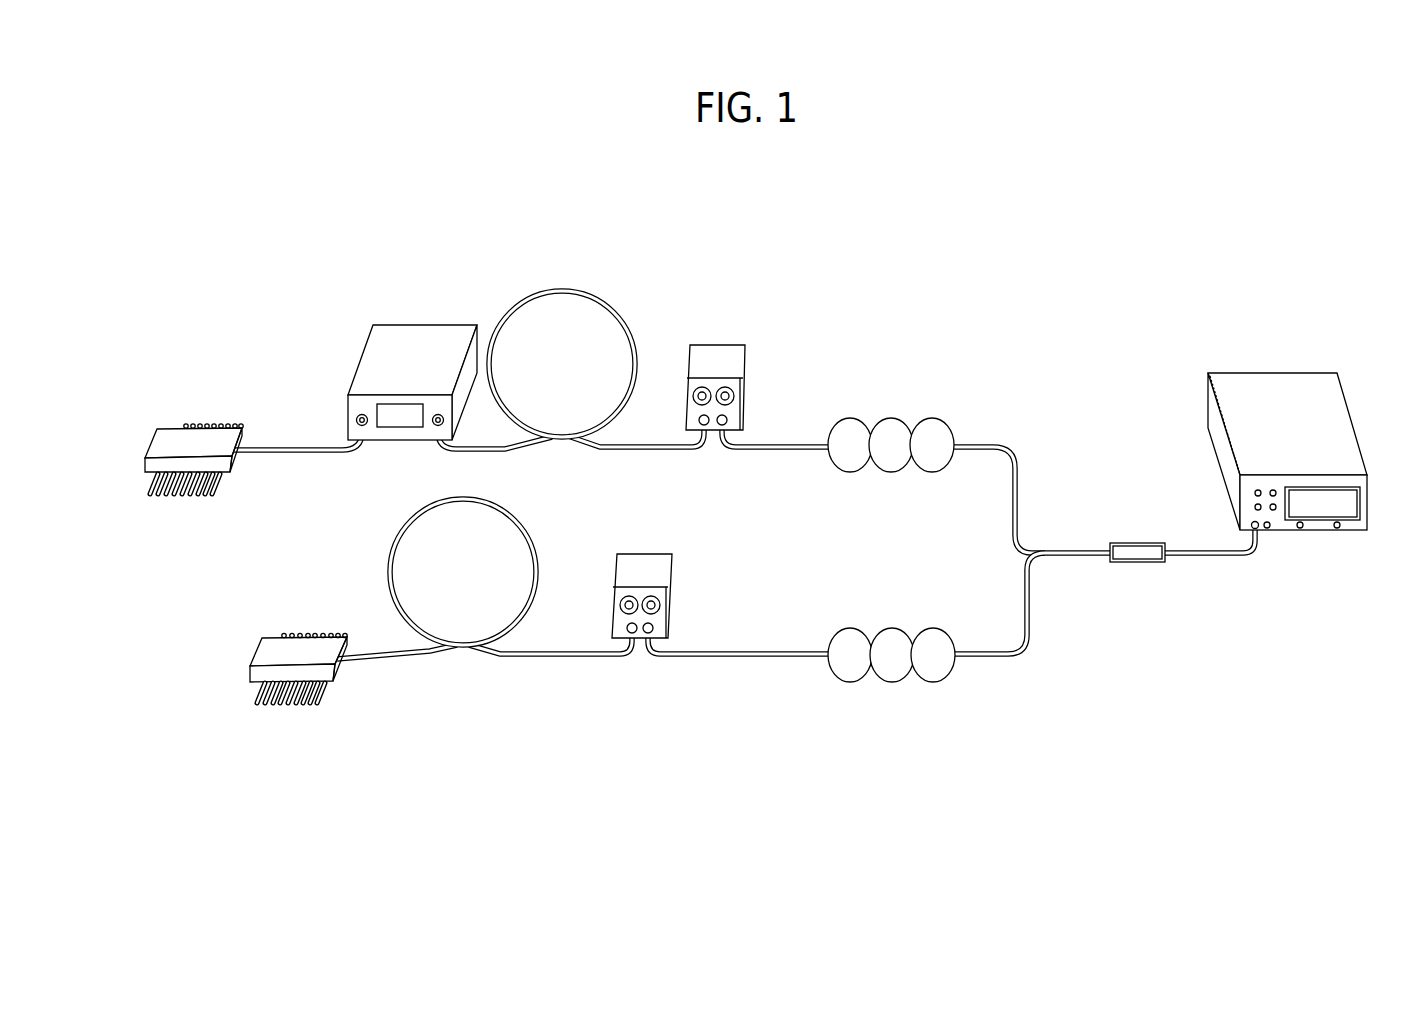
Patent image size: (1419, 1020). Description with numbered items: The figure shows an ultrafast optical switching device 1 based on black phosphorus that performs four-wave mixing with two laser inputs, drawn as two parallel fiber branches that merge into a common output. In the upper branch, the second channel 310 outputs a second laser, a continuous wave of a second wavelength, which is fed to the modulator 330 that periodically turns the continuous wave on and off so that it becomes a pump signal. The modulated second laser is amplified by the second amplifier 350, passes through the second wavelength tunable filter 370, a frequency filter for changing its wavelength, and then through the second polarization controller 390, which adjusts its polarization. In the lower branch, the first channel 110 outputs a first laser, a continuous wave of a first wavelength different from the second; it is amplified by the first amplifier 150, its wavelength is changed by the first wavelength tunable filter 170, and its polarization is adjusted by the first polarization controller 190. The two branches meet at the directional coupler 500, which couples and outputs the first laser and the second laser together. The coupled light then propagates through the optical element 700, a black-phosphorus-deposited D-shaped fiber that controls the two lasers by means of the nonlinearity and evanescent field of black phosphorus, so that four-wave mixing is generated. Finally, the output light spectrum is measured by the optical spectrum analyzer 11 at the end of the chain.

The ultrafast optical switching device 1 is at (879, 181).
The optical spectrum analyzer 11 is at (1265, 370).
The first channel 110 is at (250, 668).
The first amplifier 150 is at (436, 658).
The first wavelength tunable filter 170 is at (673, 573).
The first polarization controller 190 is at (892, 628).
The second channel 310 is at (162, 428).
The modulator 330 is at (416, 324).
The second amplifier 350 is at (560, 288).
The second wavelength tunable filter 370 is at (722, 343).
The second polarization controller 390 is at (892, 418).
The directional coupler 500 is at (1052, 548).
The optical element 700 is at (1137, 542).